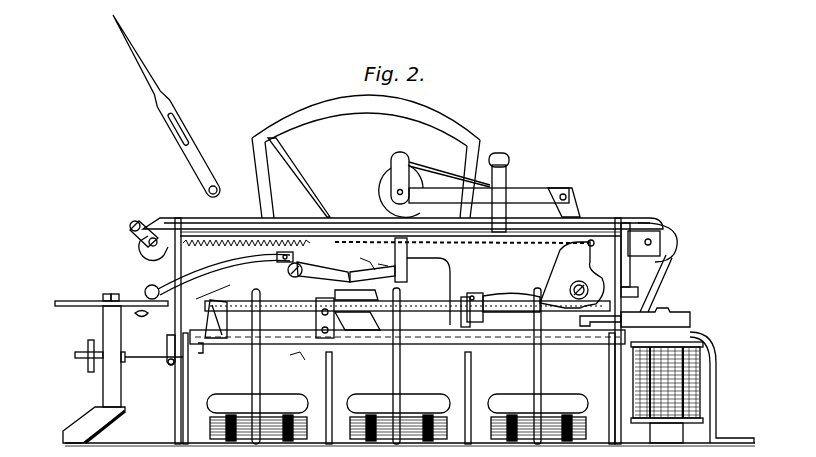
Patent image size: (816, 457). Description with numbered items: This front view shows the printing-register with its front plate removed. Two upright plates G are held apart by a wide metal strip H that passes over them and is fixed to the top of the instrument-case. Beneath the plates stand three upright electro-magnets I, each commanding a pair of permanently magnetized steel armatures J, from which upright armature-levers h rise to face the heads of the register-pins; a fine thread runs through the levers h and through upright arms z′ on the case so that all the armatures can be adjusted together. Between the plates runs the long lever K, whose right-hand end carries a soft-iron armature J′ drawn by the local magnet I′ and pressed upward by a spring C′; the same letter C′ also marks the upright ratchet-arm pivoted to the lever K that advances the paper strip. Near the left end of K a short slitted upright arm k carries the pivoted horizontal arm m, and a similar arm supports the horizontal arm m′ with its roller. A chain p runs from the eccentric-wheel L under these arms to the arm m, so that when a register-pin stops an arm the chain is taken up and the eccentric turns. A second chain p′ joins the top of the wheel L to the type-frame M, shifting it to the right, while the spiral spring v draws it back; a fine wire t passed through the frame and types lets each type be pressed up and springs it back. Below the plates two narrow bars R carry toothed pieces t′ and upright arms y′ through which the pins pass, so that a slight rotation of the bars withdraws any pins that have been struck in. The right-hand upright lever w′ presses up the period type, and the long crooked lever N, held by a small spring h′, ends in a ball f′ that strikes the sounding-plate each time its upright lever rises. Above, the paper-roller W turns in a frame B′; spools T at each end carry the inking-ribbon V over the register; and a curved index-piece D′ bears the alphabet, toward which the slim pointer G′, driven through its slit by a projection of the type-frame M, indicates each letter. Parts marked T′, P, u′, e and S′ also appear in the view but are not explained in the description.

The inking-ribbon V is at (403, 214).
The type-frame M is at (400, 241).
The wide strip H is at (629, 266).
The upright arms z′ is at (399, 388).
The armature-levers h is at (400, 366).
The narrow bars R is at (407, 337).
The straight arms y′ is at (413, 312).
The armatures J is at (397, 416).
The electro-magnets I is at (399, 428).
The upright ratchet-arm C′ is at (511, 290).
The local magnet I′ is at (666, 382).
The soft-iron armature J′ is at (659, 313).
The end bracket T′ is at (652, 242).
The eccentric-wheel L is at (572, 275).
The chain p is at (448, 305).
The fine wire t is at (591, 236).
The chain p′ is at (462, 237).
The long lever K is at (421, 260).
The spiral spring v is at (246, 236).
The paper-roller W is at (393, 191).
The frame B′ is at (485, 184).
The curved index-piece D′ is at (240, 109).
The slim pointer G′ is at (166, 106).
The spool T is at (143, 248).
The long crooked lever N is at (246, 274).
The plate P is at (336, 270).
The upright plates G is at (451, 281).
The pawl u′ is at (366, 258).
The upright lever w′ is at (383, 259).
The ball f′ is at (148, 288).
The small spring h′ is at (210, 291).
The eye e is at (141, 318).
The standard S′ is at (111, 368).
The curved pieces t′ is at (165, 348).
The upright arm k is at (260, 325).
The horizontal arm m is at (223, 313).
The horizontal arm m′ is at (356, 300).